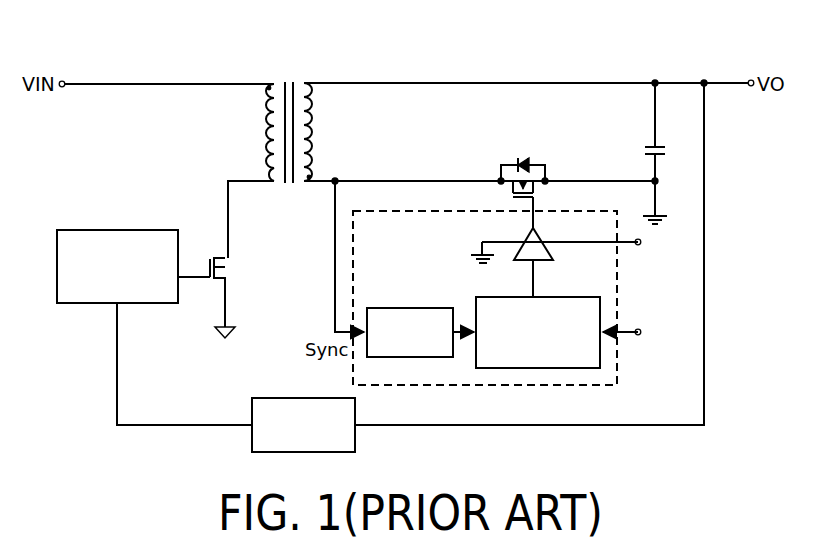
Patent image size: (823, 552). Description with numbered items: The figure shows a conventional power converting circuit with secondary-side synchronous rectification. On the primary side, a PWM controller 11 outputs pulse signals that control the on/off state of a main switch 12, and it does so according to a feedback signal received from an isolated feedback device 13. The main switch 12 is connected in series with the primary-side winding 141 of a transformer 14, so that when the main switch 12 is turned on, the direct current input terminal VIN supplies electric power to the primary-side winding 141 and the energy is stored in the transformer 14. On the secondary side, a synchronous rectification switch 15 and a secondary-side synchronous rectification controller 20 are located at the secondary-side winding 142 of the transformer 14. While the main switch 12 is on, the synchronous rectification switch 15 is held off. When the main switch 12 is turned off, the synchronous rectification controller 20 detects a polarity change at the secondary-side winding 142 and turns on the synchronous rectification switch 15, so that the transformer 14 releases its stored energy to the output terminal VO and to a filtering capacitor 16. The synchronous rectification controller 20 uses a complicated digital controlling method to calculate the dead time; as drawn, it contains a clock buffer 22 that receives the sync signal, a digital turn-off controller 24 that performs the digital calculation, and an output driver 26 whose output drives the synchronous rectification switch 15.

The PWM controller 11 is at (120, 229).
The main switch 12 is at (211, 243).
The isolated feedback device 13 is at (290, 397).
The transformer 14 is at (293, 96).
The primary-side winding 141 is at (258, 138).
The secondary-side winding 142 is at (322, 118).
The synchronous rectification switch 15 is at (541, 154).
The filtering capacitor 16 is at (682, 150).
The secondary-side synchronous rectification controller 20 is at (525, 298).
The clock buffer 22 is at (418, 307).
The digital turn-off controller 24 is at (497, 296).
The output driver 26 is at (517, 223).